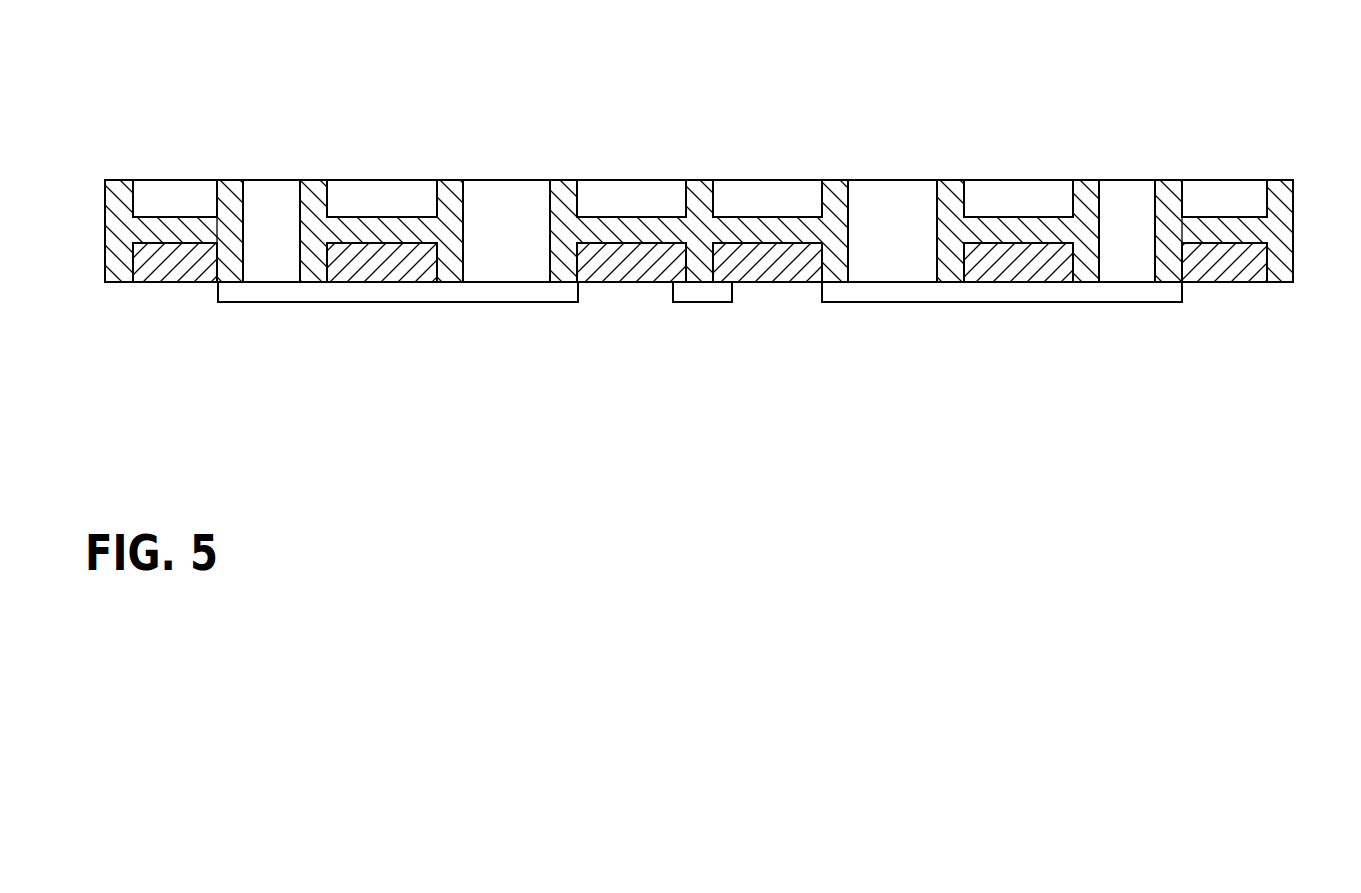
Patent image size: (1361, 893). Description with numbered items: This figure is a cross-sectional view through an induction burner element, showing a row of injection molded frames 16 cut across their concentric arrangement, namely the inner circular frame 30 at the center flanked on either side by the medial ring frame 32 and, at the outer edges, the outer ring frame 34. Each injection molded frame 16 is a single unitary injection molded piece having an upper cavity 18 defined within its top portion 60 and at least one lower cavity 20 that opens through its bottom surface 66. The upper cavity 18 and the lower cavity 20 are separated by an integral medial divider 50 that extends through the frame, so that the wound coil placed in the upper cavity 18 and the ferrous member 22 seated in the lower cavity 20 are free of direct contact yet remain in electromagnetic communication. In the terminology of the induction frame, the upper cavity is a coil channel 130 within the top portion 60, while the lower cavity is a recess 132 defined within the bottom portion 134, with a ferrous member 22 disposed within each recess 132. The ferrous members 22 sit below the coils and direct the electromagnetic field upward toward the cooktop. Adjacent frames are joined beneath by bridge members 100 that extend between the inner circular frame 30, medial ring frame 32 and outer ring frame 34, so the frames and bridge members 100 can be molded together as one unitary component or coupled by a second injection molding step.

The injection molded frame 16 is at (127, 229).
The upper cavity 18 is at (176, 179).
The lower cavity 20 is at (149, 287).
The ferrous member 22 is at (182, 267).
The inner circular frame 30 is at (620, 171).
The medial ring frame 32 is at (387, 171).
The outer ring frame 34 is at (229, 165).
The integral medial divider 50 is at (632, 233).
The top portion 60 is at (91, 187).
The bottom surface 66 is at (118, 284).
The bridge member 100 is at (481, 288).
The coil channel 130 is at (759, 206).
The recess 132 is at (750, 289).
The bottom portion 134 is at (664, 271).